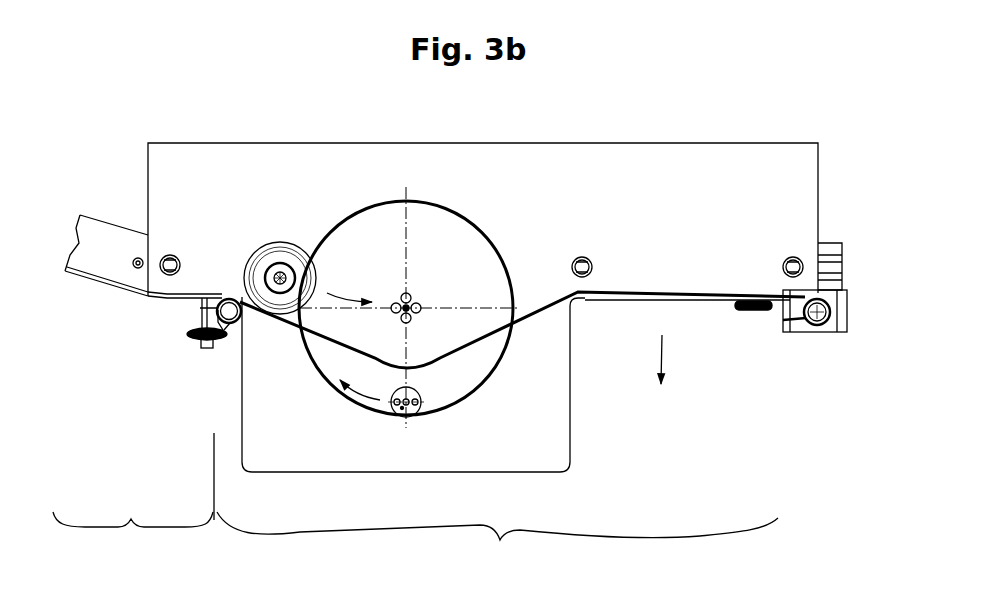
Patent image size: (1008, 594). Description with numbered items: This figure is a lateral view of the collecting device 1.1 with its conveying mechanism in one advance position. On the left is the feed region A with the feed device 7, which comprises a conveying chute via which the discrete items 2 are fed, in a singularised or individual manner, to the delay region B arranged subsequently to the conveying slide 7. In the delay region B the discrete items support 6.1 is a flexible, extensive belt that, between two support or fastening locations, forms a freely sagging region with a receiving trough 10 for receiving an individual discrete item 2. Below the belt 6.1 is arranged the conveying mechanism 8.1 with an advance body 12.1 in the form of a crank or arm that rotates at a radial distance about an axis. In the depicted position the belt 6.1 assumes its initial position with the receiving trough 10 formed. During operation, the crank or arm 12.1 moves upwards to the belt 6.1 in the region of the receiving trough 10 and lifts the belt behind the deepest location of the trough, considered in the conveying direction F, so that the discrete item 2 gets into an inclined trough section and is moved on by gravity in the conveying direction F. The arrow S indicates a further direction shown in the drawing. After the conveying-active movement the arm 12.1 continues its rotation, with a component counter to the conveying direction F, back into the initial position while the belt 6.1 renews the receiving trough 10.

The collecting device 1.1 is at (642, 113).
The discrete item 2 is at (215, 233).
The feed device 7 is at (125, 210).
The discrete items support 6.1 is at (284, 332).
The conveying mechanism 8.1 is at (478, 406).
The receiving trough 10 is at (545, 316).
The advance body 12.1 is at (398, 414).
The conveying direction F is at (357, 302).
The sheet direction S is at (662, 358).
The feed region A is at (133, 494).
The delay region B is at (497, 539).